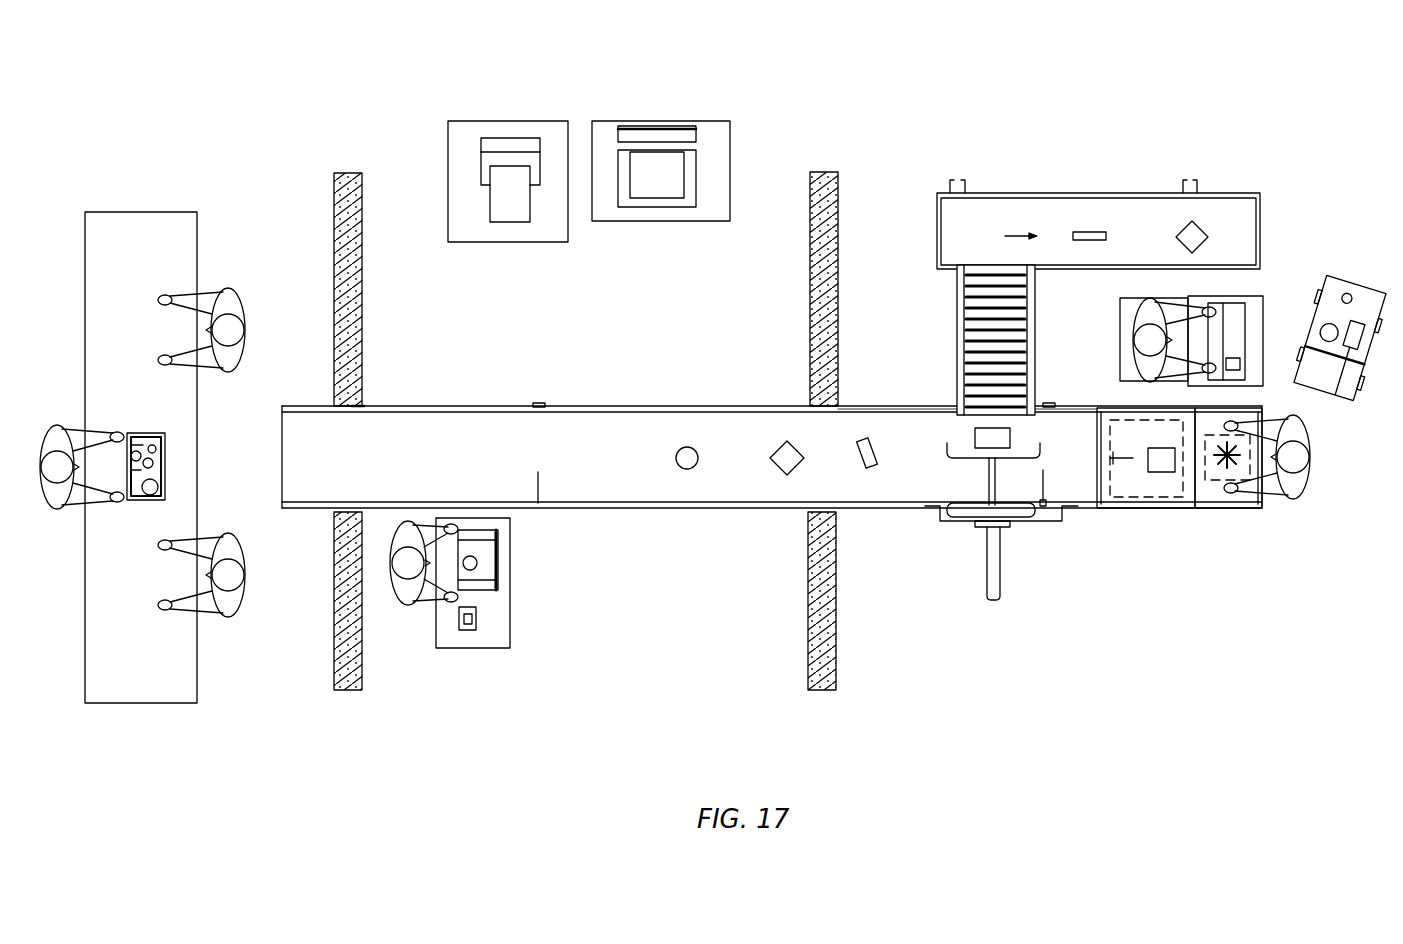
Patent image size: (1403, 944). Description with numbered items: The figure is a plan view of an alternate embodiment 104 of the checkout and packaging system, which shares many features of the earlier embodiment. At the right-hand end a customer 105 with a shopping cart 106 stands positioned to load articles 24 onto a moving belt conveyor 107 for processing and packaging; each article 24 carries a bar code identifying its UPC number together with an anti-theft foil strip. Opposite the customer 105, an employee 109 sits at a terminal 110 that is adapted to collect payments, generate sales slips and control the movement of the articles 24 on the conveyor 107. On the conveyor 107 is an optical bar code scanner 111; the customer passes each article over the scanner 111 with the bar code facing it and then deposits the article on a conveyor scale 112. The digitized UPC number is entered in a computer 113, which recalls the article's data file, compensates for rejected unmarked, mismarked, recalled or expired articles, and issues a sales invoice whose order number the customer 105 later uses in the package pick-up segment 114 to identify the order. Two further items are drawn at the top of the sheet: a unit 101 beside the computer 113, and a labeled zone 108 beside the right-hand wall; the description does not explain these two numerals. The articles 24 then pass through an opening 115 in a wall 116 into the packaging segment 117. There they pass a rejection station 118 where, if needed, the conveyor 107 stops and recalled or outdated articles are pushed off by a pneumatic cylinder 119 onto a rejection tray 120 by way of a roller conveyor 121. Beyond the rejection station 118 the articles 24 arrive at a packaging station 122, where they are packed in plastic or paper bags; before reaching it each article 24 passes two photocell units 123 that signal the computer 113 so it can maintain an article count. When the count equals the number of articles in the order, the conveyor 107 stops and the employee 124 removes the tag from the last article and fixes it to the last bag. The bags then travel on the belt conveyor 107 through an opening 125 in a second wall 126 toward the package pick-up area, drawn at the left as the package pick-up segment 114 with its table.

The article 24 is at (1335, 398).
The disc copying station 101 is at (511, 140).
The alternate embodiment 104 is at (772, 517).
The customer 105 is at (1305, 495).
The shopping cart 106 is at (1339, 346).
The moving belt conveyor 107 is at (911, 466).
The assembly area 108 is at (905, 349).
The employee 109 is at (1138, 325).
The terminal 110 is at (1245, 300).
The optical bar code scanner 111 is at (1215, 495).
The conveyor scale 112 is at (1170, 495).
The computer 113 is at (662, 120).
The package pick-up segment 114 is at (242, 477).
The opening 115 is at (800, 406).
The wall 116 is at (810, 335).
The packaging segment 117 is at (772, 441).
The rejection station 118 is at (1098, 205).
The pneumatic cylinder 119 is at (997, 600).
The rejection tray 120 is at (1210, 215).
The roller conveyor 121 is at (975, 348).
The packaging station 122 is at (592, 536).
The photocell unit 123 is at (540, 403).
The employee 124 is at (422, 600).
The opening 125 is at (362, 406).
The wall 126 is at (358, 335).